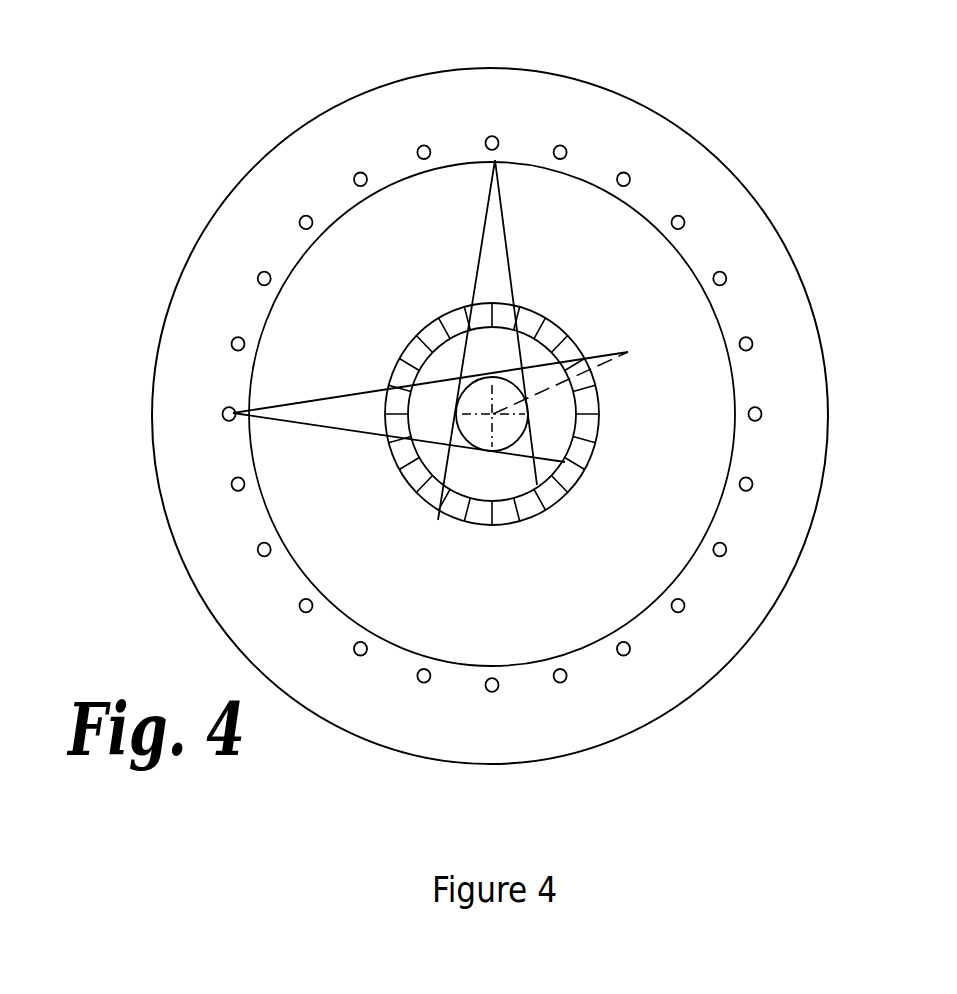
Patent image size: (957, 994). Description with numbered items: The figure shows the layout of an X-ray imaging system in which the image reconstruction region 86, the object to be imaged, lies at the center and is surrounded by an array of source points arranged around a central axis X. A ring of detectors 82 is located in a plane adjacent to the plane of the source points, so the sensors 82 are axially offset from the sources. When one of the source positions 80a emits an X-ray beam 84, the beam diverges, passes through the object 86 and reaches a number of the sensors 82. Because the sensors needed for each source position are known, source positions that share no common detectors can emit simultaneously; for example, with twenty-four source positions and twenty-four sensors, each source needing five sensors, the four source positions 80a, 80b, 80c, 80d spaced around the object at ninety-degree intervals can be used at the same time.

The source position 80a is at (498, 138).
The source position 80b is at (228, 420).
The source position 80c is at (498, 688).
The source position 80d is at (762, 410).
The ring of detectors 82 is at (570, 478).
The X-ray beam 84 is at (508, 257).
The image reconstruction region 86 is at (482, 443).
The axis X is at (572, 368).